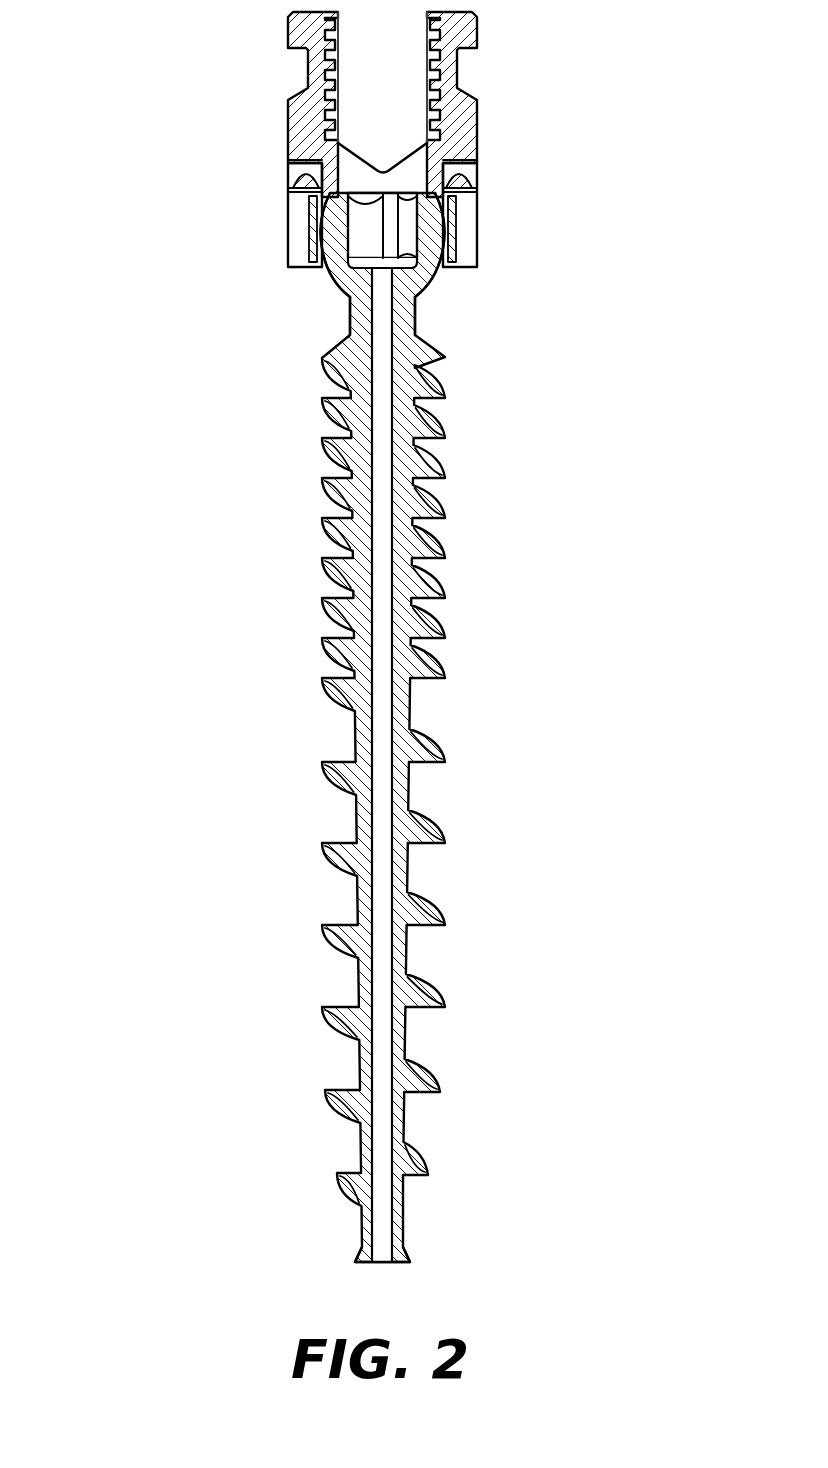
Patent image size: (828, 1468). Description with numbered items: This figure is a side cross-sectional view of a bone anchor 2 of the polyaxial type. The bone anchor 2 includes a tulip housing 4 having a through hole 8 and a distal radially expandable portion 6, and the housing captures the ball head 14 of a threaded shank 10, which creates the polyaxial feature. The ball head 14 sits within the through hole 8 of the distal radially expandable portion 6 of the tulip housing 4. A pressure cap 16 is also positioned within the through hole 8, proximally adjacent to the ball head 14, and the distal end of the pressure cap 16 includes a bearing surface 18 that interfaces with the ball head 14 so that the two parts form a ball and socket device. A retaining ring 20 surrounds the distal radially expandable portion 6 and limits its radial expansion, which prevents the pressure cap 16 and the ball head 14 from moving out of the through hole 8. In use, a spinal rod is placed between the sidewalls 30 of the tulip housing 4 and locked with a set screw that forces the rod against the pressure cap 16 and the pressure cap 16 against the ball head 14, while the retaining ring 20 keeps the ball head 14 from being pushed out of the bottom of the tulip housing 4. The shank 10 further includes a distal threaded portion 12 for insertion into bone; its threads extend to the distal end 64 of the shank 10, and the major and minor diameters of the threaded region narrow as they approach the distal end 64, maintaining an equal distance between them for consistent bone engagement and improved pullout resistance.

The bone anchor 2 is at (373, 668).
The tulip housing 4 is at (419, 139).
The distal radially expandable portion 6 is at (320, 270).
The through hole 8 is at (376, 59).
The threaded shank 10 is at (482, 759).
The distal threaded portion 12 is at (414, 700).
The ball head 14 is at (422, 278).
The pressure cap 16 is at (408, 165).
The bearing surface 18 is at (327, 228).
The retaining ring 20 is at (466, 240).
The sidewalls 30 is at (297, 132).
The distal end 64 is at (400, 1262).